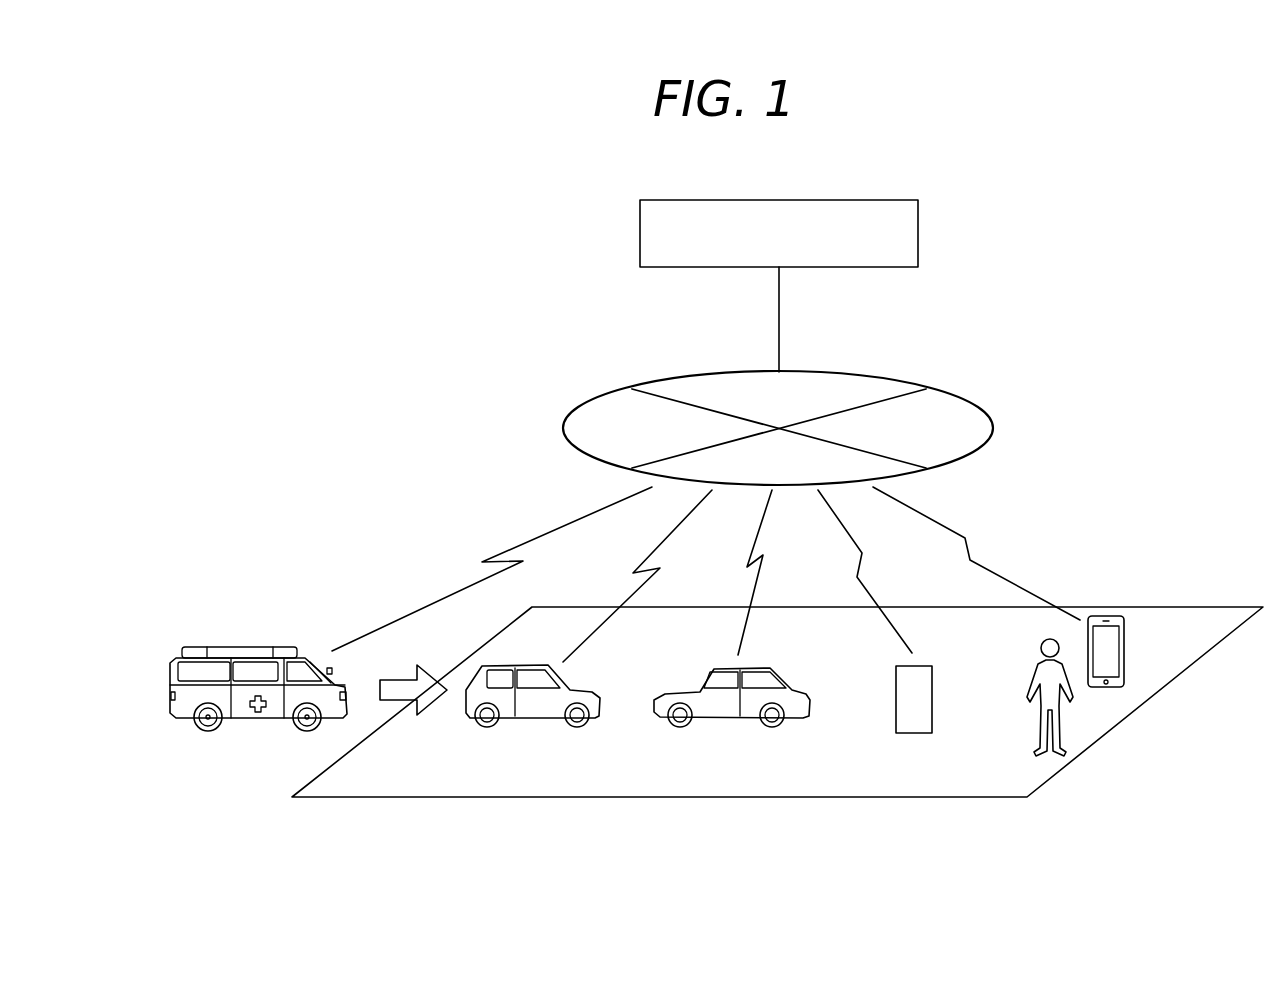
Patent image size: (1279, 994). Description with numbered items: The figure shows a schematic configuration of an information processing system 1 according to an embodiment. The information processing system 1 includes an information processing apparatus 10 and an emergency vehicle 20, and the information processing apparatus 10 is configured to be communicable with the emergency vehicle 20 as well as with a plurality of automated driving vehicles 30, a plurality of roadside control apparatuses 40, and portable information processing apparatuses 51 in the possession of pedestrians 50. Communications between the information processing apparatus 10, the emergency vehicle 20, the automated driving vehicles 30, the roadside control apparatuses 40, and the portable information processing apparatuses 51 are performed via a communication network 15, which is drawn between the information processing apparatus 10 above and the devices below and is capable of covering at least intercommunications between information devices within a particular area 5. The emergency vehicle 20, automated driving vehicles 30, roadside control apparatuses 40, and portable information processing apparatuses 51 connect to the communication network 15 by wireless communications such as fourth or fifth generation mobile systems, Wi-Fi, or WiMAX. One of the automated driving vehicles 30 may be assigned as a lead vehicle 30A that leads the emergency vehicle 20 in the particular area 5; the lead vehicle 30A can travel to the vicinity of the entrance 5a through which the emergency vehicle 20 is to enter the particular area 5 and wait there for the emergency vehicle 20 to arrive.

The information processing system 1 is at (285, 282).
The particular area 5 is at (1182, 608).
The entrance 5a is at (427, 702).
The information processing apparatus 10 is at (918, 232).
The communication network 15 is at (995, 425).
The emergency vehicle 20 is at (258, 647).
The automated driving vehicle 30 is at (760, 670).
The lead vehicle 30A is at (516, 666).
The roadside control apparatus 40 is at (921, 666).
The pedestrian 50 is at (1062, 705).
The portable information processing apparatus 51 is at (1108, 616).